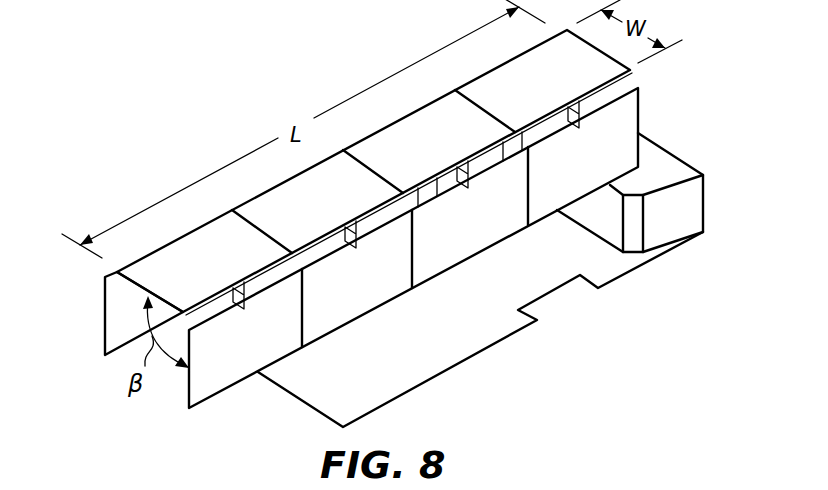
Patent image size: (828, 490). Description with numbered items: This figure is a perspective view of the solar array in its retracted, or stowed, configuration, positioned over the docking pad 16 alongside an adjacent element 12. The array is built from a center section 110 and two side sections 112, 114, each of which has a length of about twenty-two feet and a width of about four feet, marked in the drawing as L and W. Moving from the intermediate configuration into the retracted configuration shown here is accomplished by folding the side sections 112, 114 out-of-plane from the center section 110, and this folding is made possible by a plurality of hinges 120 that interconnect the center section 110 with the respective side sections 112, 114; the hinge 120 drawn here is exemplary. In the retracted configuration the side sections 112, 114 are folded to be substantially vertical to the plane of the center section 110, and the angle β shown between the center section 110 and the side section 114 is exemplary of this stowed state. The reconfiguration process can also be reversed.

The block / electronic component 12 is at (692, 207).
The docking pad 16 is at (312, 390).
The center section 110 is at (165, 247).
The side section 112 is at (107, 323).
The side section 114 is at (205, 380).
The hinge 120 is at (584, 108).